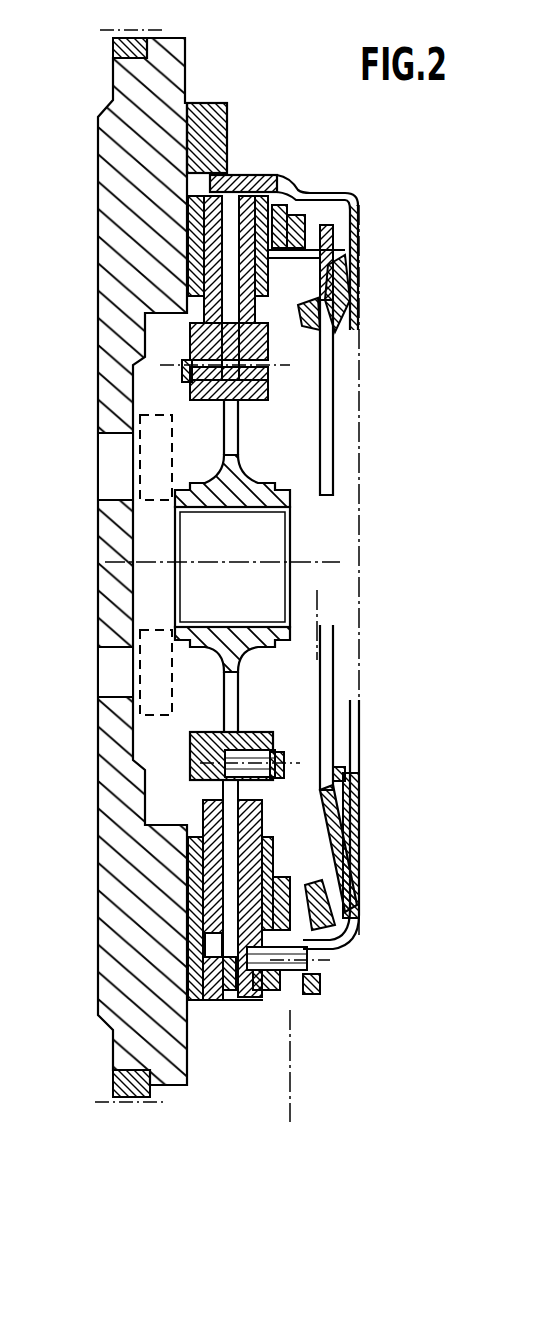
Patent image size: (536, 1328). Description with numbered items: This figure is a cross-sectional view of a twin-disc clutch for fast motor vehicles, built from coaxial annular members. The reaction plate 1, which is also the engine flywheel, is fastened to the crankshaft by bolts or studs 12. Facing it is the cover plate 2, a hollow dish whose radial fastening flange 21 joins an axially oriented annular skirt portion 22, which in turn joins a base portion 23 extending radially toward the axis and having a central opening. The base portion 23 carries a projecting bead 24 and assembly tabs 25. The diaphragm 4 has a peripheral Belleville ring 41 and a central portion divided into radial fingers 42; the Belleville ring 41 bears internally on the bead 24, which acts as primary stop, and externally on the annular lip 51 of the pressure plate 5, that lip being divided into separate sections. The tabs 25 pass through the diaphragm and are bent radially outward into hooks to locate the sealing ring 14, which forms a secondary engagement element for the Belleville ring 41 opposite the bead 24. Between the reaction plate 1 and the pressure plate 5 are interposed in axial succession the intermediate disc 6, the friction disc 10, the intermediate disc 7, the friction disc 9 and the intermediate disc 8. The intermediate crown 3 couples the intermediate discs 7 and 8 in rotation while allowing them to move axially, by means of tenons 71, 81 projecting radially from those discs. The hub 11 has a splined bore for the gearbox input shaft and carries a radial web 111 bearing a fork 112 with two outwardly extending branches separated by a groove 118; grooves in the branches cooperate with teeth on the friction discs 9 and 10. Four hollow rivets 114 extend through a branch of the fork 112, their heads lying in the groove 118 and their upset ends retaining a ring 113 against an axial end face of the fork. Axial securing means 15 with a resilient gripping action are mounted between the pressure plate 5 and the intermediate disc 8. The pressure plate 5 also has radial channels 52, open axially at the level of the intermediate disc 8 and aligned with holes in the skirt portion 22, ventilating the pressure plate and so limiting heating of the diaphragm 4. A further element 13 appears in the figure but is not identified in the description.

The reaction plate 1 is at (179, 1098).
The cover plate 2 is at (348, 182).
The intermediate crown 3 is at (208, 98).
The diaphragm 4 is at (340, 445).
The pressure plate 5 is at (305, 947).
The intermediate disc 6 is at (235, 178).
The intermediate disc 7 is at (262, 185).
The intermediate disc 8 is at (290, 180).
The friction disc 9 is at (280, 345).
The friction disc 10 is at (190, 824).
The hub 11 is at (176, 590).
The bolts or studs 12 is at (160, 630).
The fastening bolt 13 is at (122, 1105).
The sealing ring 14 is at (320, 792).
The axial fastening device 15 is at (318, 984).
The radial fastening flange 21 is at (214, 172).
The annular skirt portion 22 is at (308, 185).
The base portion 23 is at (345, 900).
The projecting bead 24 is at (350, 850).
The assembly tabs 25 is at (343, 343).
The Belleville ring 41 is at (330, 910).
The radial fingers 42 is at (345, 665).
The annular lip 51 is at (347, 240).
The radial channels 52 is at (345, 264).
The tenons 71 is at (225, 1002).
The tenons 81 is at (262, 1002).
The radial web 111 is at (224, 678).
The fork 112 is at (210, 732).
The ring 113 is at (205, 332).
The rivets 114 is at (260, 360).
The groove 118 is at (203, 778).